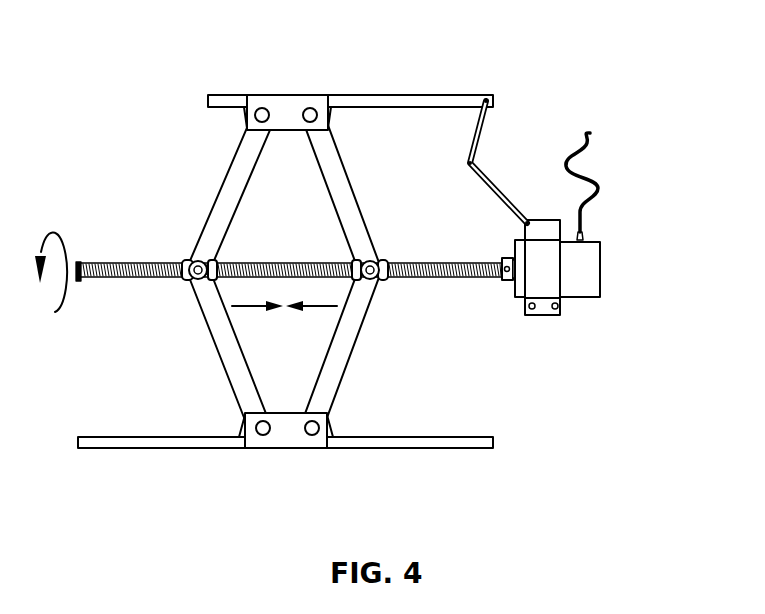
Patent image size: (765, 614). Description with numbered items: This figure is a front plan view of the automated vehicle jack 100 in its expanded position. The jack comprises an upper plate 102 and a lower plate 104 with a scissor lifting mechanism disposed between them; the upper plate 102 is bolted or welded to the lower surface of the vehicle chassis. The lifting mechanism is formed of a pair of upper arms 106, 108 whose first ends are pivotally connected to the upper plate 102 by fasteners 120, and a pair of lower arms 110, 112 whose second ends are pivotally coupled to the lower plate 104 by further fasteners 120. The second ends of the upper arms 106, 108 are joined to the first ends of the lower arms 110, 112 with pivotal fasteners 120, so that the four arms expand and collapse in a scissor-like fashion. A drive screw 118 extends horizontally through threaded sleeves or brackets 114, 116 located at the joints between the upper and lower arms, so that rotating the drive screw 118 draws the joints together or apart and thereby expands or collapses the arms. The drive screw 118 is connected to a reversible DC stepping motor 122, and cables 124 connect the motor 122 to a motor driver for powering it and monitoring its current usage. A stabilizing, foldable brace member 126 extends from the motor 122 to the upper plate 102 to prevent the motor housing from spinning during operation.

The vehicle jack 100 is at (605, 63).
The upper plate 102 is at (290, 95).
The lower plate 104 is at (262, 450).
The upper arm 106 is at (241, 151).
The upper arm 108 is at (344, 160).
The lower arm 110 is at (242, 383).
The lower arm 112 is at (328, 392).
The threaded sleeve 114 is at (184, 246).
The threaded sleeve 116 is at (383, 300).
The drive screw 118 is at (128, 279).
The fasteners 120 is at (261, 108).
The DC stepping motor 122 is at (587, 298).
The cables 124 is at (605, 185).
The brace member 126 is at (510, 212).